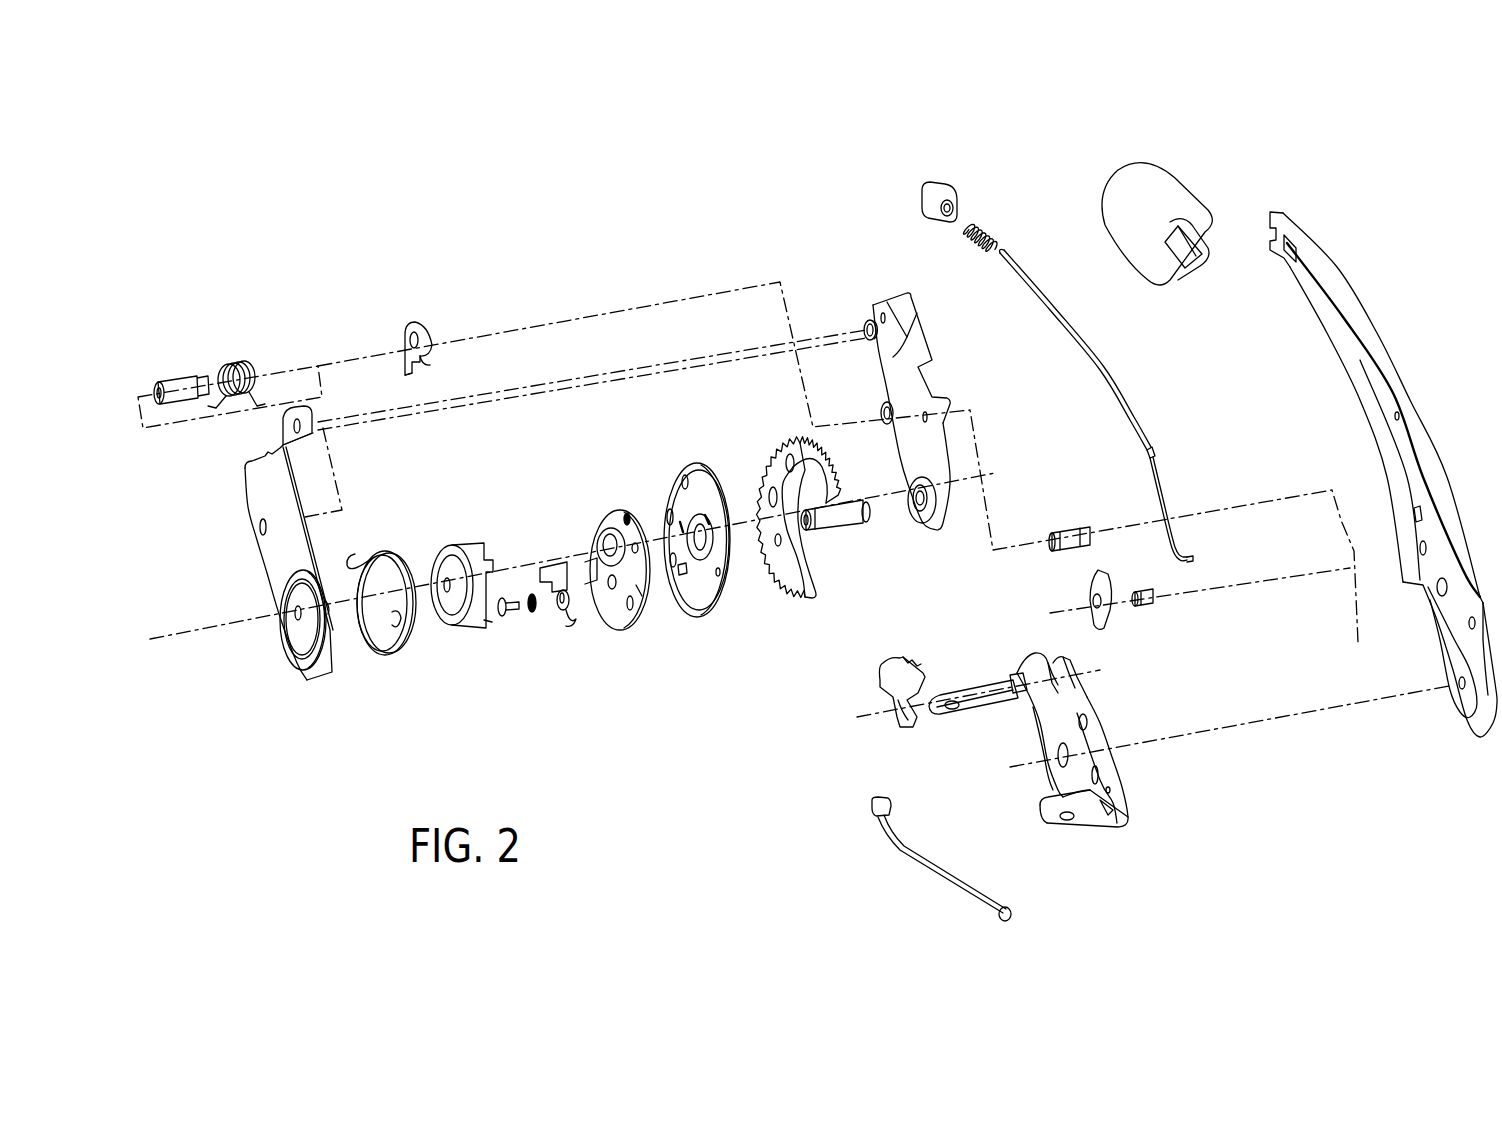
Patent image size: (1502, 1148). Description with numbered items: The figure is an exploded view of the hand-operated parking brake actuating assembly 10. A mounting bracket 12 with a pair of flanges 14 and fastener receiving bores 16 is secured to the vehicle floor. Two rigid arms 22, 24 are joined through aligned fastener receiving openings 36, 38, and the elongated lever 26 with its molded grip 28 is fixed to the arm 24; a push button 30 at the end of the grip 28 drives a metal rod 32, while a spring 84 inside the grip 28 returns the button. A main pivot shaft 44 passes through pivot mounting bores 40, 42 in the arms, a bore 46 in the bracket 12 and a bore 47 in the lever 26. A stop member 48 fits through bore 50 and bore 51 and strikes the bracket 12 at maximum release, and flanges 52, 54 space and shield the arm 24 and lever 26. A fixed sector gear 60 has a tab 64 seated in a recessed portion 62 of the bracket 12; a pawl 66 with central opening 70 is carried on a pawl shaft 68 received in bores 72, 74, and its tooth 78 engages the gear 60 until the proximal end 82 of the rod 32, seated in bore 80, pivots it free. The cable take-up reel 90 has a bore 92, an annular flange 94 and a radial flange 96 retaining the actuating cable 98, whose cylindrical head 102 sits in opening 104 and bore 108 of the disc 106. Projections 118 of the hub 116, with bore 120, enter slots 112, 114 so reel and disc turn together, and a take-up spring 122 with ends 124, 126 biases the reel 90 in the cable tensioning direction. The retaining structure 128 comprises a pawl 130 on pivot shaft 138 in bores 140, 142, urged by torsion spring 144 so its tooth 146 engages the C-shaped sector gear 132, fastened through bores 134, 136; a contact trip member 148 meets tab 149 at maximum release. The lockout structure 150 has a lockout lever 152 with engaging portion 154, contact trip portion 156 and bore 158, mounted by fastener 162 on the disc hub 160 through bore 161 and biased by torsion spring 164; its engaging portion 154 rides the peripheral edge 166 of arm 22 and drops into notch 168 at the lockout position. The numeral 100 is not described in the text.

The actuating assembly 10 is at (556, 172).
The mounting bracket 12 is at (1120, 763).
The flanges 14 is at (1088, 822).
The fastener receiving bores 16 is at (1066, 820).
The arm 22 is at (300, 490).
The arm 24 is at (905, 385).
The lever 26 is at (1380, 325).
The grip 28 is at (1160, 185).
The push button 30 is at (938, 186).
The rod 32 is at (1132, 397).
The fastener receiving opening 36 is at (296, 418).
The fastener receiving opening 38 is at (872, 318).
The pivot mounting bore 40 is at (296, 615).
The pivot mounting bore 42 is at (922, 495).
The main pivot shaft 44 is at (832, 520).
The pivot mounting bore 46 is at (1060, 770).
The pivot mounting bore 47 is at (1457, 686).
The stop member 48 is at (1072, 532).
The bore 50 is at (935, 430).
The bore 51 is at (1467, 622).
The flange 52 is at (912, 308).
The flange 54 is at (1385, 450).
The sector gear 60 is at (880, 686).
The recessed portion 62 is at (1073, 680).
The tab 64 is at (905, 722).
The pawl 66 is at (1110, 615).
The pawl shaft 68 is at (1155, 605).
The central opening 70 is at (1093, 602).
The bore 72 is at (866, 338).
The bore 74 is at (1426, 546).
The tooth 78 is at (1100, 630).
The bore 80 is at (1105, 580).
The proximal end 82 is at (1190, 556).
The spring 84 is at (986, 228).
The cable take-up reel 90 is at (605, 530).
The bore 92 is at (605, 540).
The annular flange 94 is at (612, 632).
The flange 96 is at (628, 632).
The actuating cable 98 is at (920, 870).
The hub 100 is at (700, 562).
The cylindrical head 102 is at (872, 810).
The partially cylindrical opening 104 is at (590, 562).
The disc 106 is at (702, 488).
The bore 108 is at (627, 526).
The slots 112 is at (628, 628).
The slots 114 is at (712, 570).
The hub 116 is at (466, 556).
The projections 118 is at (482, 625).
The bore 120 is at (440, 575).
The take-up spring 122 is at (384, 655).
The end 124 is at (355, 550).
The end 126 is at (399, 632).
The retaining structure 128 is at (461, 271).
The pawl 130 is at (415, 333).
The sector gear 132 is at (766, 470).
The bores 134 is at (668, 508).
The bores 136 is at (792, 560).
The pivot shaft 138 is at (180, 380).
The bore 140 is at (258, 532).
The bore 142 is at (882, 410).
The torsion spring 144 is at (245, 365).
The tooth 146 is at (432, 365).
The contact trip member 148 is at (404, 376).
The tab 149 is at (1013, 696).
The lockout structure 150 is at (544, 654).
The lockout lever 152 is at (558, 612).
The engaging portion 154 is at (548, 565).
The contact trip portion 156 is at (569, 615).
The bore 158 is at (556, 612).
The hub 160 is at (681, 576).
The bore 161 is at (641, 592).
The fastener 162 is at (493, 596).
The torsion spring 164 is at (528, 610).
The peripheral edge 166 is at (312, 666).
The notch 168 is at (330, 622).